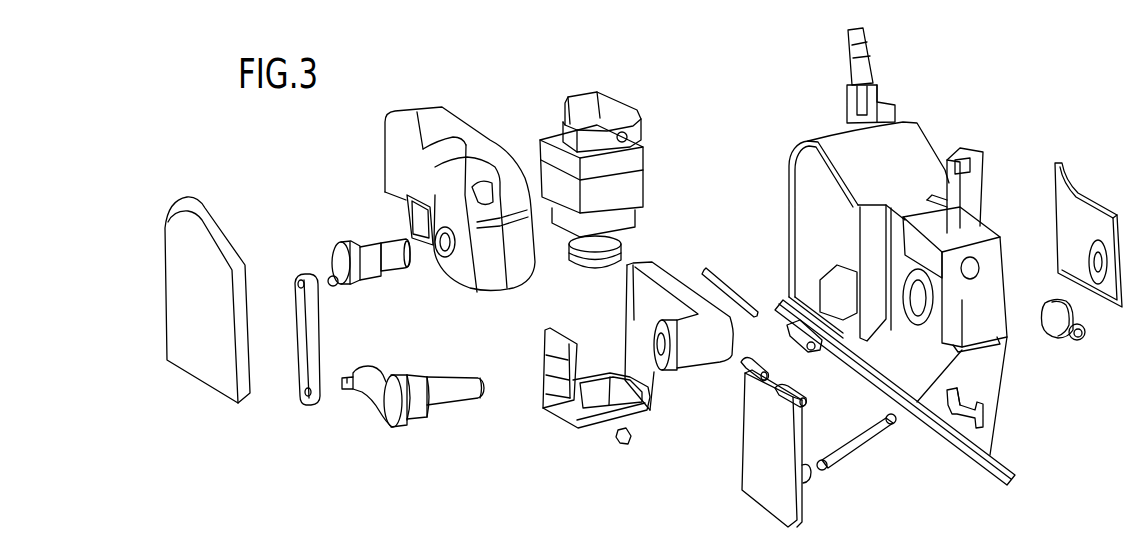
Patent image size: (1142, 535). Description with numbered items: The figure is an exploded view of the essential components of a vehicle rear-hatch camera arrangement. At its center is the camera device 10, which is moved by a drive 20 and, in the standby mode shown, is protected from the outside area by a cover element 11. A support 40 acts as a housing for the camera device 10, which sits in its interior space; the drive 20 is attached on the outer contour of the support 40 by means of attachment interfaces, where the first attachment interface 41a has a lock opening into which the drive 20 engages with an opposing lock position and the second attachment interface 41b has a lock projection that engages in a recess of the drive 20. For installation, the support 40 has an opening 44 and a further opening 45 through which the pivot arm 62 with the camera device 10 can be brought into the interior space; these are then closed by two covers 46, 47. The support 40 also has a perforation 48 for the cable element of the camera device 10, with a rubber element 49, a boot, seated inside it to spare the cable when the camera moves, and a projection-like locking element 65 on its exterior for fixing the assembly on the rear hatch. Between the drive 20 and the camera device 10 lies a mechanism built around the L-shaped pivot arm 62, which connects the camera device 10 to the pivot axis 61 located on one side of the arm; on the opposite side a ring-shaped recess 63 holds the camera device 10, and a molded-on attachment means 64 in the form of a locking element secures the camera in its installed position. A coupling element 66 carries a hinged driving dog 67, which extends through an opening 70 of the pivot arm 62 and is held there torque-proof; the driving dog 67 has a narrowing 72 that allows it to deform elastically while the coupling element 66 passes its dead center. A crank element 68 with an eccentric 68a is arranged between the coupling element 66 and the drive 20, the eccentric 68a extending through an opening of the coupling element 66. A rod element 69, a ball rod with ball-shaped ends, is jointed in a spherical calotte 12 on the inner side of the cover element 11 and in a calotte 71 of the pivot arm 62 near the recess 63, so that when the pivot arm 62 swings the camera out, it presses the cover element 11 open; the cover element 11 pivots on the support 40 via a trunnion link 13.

The camera device 10 is at (648, 122).
The cover element 11 is at (754, 442).
The spherical calotte 12 is at (810, 480).
The trunnion link 13 is at (737, 280).
The drive 20 is at (457, 109).
The support 40 is at (892, 271).
The first attachment interface 41a is at (983, 160).
The second attachment interface 41b is at (873, 65).
The opening 44 is at (810, 178).
The opening 45 is at (971, 268).
The cover 46 is at (192, 345).
The cover 47 is at (1077, 207).
The perforation 48 is at (1000, 260).
The rubber element 49 is at (1070, 340).
The pivot axis 61 is at (313, 262).
The pivot arm 62 is at (650, 372).
The recess 63 is at (588, 381).
The attachment means 64 is at (545, 330).
The locking element 65 is at (958, 425).
The coupling element 66 is at (302, 343).
The driving dog 67 is at (403, 424).
The crank element 68 is at (368, 271).
The eccentric 68a is at (338, 287).
The rod element 69 is at (868, 444).
The opening 70 is at (658, 398).
The calotte 71 is at (620, 444).
The narrowing 72 is at (368, 401).